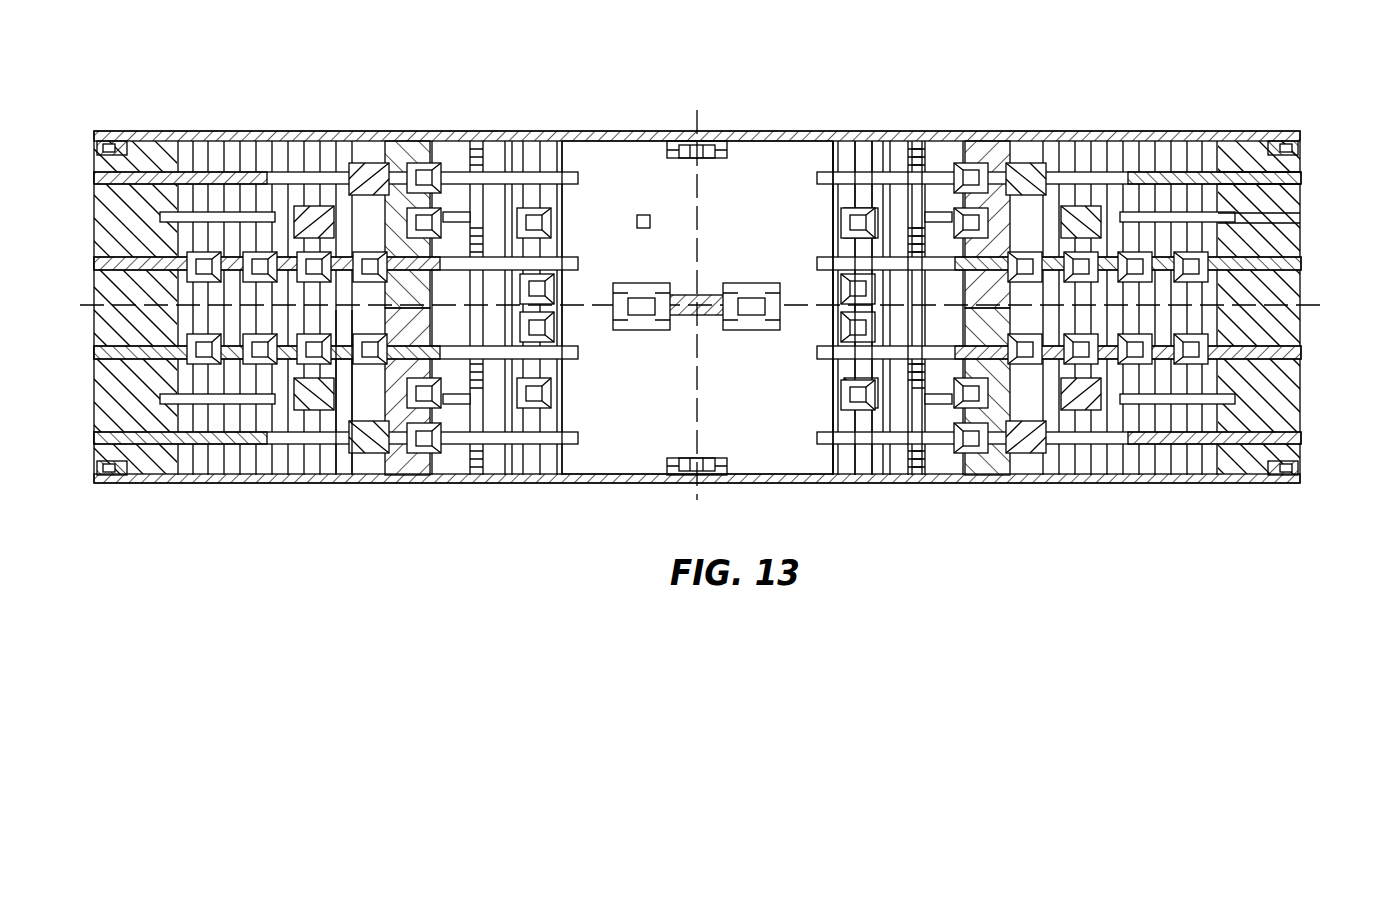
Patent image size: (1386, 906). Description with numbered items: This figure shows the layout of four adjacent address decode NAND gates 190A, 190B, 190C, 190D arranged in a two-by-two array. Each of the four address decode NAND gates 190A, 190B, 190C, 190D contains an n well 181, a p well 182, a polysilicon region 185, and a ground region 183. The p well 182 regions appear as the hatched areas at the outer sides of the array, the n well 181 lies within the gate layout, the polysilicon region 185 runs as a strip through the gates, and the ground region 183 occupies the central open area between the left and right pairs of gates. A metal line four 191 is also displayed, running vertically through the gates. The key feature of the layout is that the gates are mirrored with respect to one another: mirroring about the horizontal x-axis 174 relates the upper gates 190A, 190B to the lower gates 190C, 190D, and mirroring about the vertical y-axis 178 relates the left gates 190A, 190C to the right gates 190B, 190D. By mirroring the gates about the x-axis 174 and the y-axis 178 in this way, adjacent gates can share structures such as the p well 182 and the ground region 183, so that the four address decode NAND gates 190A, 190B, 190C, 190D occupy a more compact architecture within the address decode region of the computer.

The x-axis 174 is at (487, 303).
The y-axis 178 is at (700, 137).
The n well 181 is at (343, 457).
The p well 182 is at (150, 261).
The ground region 183 is at (756, 407).
The polysilicon region 185 is at (913, 137).
The address decode NAND gate 190A is at (259, 104).
The address decode NAND gate 190B is at (1134, 105).
The address decode NAND gate 190C is at (236, 502).
The address decode NAND gate 190D is at (1102, 502).
The metal line four 191 is at (830, 265).